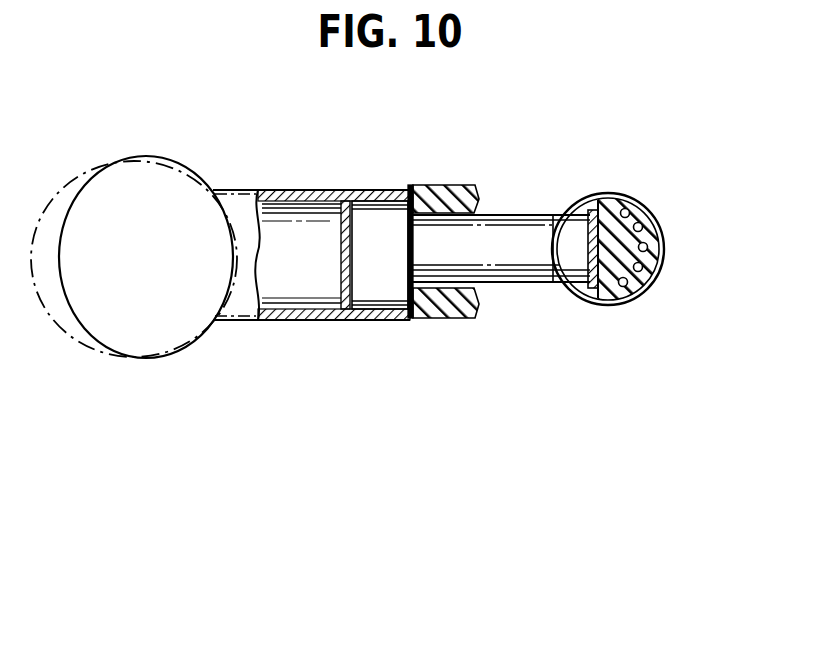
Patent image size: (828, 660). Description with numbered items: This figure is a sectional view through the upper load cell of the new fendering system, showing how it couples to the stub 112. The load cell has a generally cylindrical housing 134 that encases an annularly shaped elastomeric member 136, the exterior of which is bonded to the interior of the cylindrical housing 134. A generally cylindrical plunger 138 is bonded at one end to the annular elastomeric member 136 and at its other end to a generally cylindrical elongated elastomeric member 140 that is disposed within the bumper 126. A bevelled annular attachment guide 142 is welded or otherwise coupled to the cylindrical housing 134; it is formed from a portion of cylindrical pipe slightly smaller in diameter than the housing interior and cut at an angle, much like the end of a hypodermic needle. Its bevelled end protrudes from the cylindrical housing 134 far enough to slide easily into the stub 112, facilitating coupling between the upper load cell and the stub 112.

The stub 112 is at (230, 186).
The bevelled annular attachment guide 142 is at (327, 190).
The cylindrical housing 134 is at (397, 320).
The annularly shaped elastomeric member 136 is at (458, 183).
The cylindrical plunger 138 is at (524, 236).
The elongated elastomeric member 140 is at (647, 208).
The bumper 126 is at (650, 242).